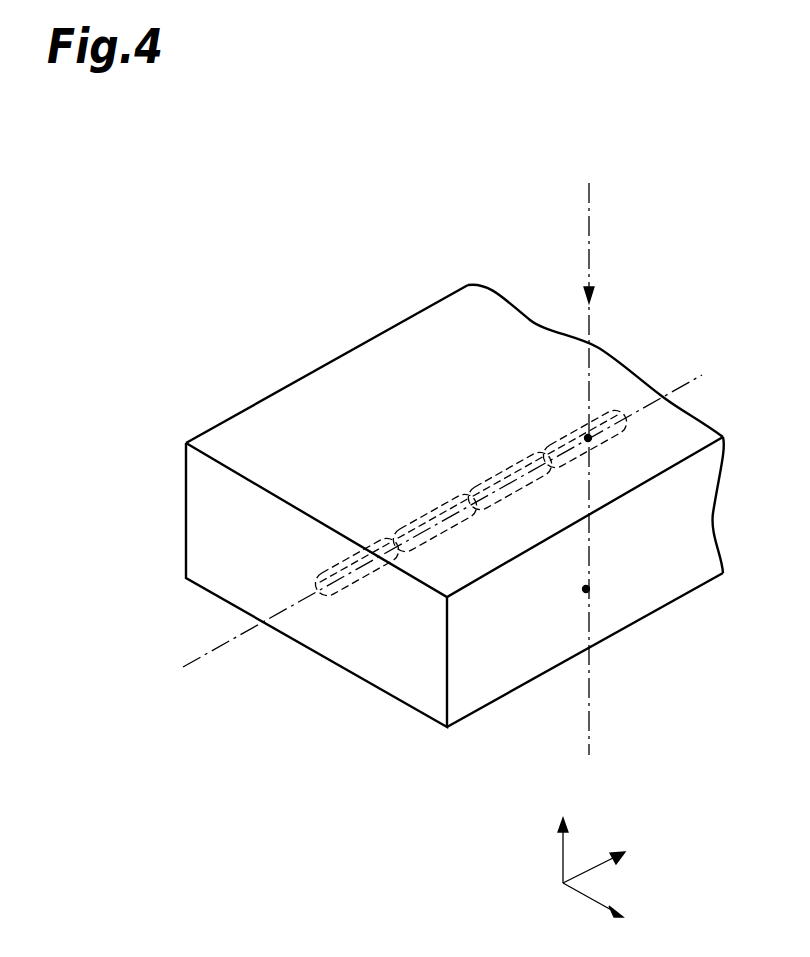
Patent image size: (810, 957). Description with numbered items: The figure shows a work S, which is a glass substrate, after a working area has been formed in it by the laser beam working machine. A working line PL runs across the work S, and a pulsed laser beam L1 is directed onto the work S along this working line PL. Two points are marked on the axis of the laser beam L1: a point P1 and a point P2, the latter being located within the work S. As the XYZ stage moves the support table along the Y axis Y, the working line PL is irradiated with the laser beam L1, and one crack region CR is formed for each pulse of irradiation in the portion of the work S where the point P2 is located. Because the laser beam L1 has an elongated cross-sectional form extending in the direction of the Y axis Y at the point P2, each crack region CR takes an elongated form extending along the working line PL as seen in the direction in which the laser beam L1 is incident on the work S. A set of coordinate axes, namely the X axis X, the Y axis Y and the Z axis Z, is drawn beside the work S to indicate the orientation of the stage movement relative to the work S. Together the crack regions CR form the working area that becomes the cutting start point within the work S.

The work S is at (352, 643).
The working line PL is at (207, 653).
The crack region CR is at (387, 543).
The laser beam L1 is at (591, 217).
The point P1 is at (590, 589).
The point P2 is at (591, 440).
The X axis X is at (605, 911).
The Y axis Y is at (604, 858).
The Z axis Z is at (562, 834).